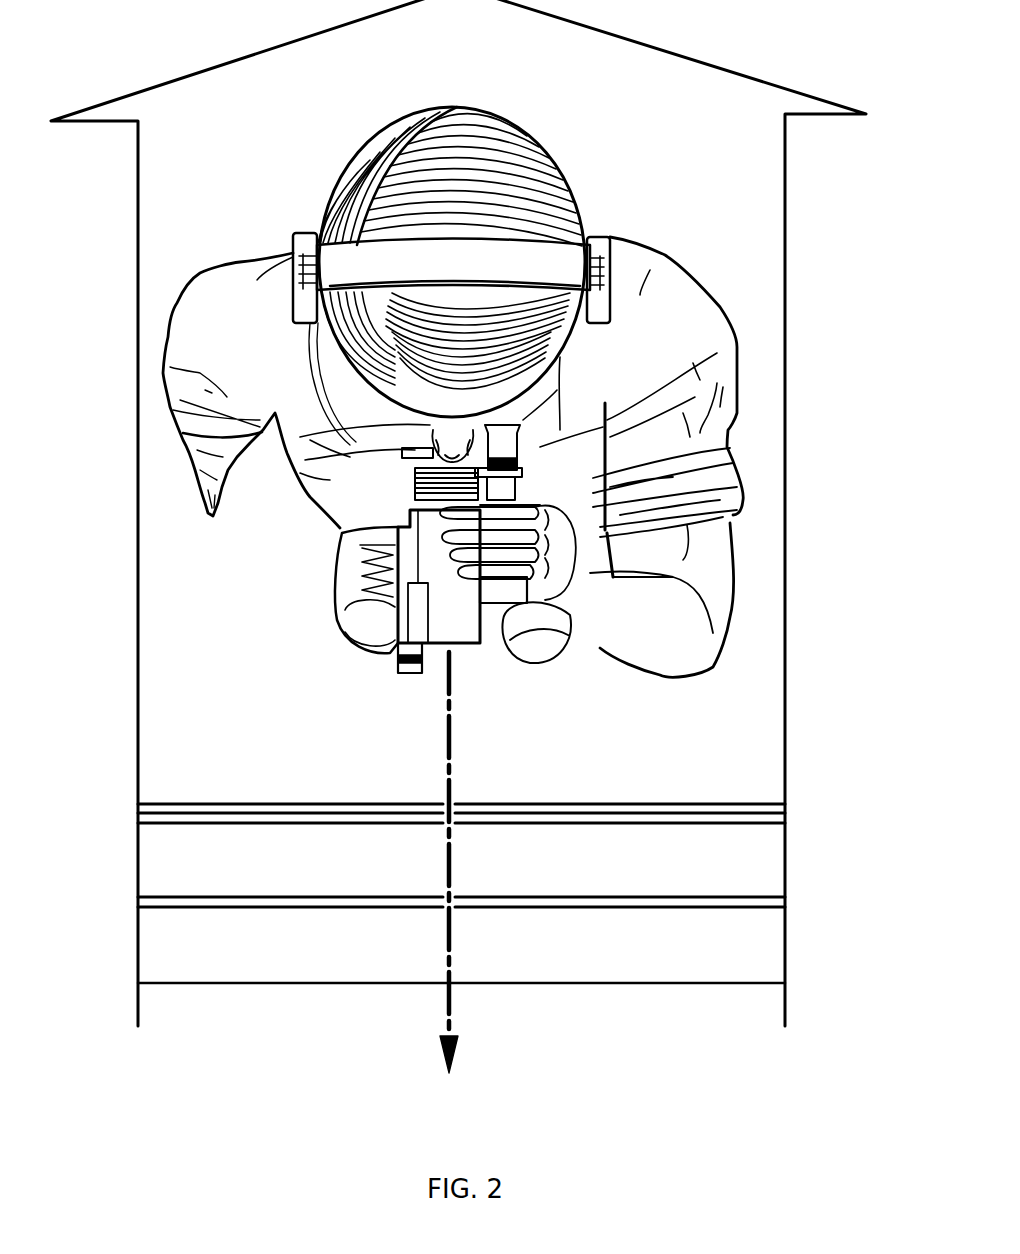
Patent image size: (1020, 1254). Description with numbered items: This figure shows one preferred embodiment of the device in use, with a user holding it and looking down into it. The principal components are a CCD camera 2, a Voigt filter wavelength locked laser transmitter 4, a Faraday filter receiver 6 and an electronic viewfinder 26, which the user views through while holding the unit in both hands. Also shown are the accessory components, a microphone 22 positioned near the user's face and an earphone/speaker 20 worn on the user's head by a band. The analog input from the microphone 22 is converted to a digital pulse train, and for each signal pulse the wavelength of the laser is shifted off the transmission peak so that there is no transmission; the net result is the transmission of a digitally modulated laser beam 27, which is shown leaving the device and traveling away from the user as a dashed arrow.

The CCD camera 2 is at (409, 679).
The Voigt filter wavelength locked laser transmitter 4 is at (470, 650).
The Faraday filter receiver 6 is at (603, 647).
The earphone/speaker 20 is at (617, 297).
The microphone 22 is at (405, 468).
The electronic viewfinder 26 is at (527, 470).
The digitally modulated laser beam 27 is at (452, 847).